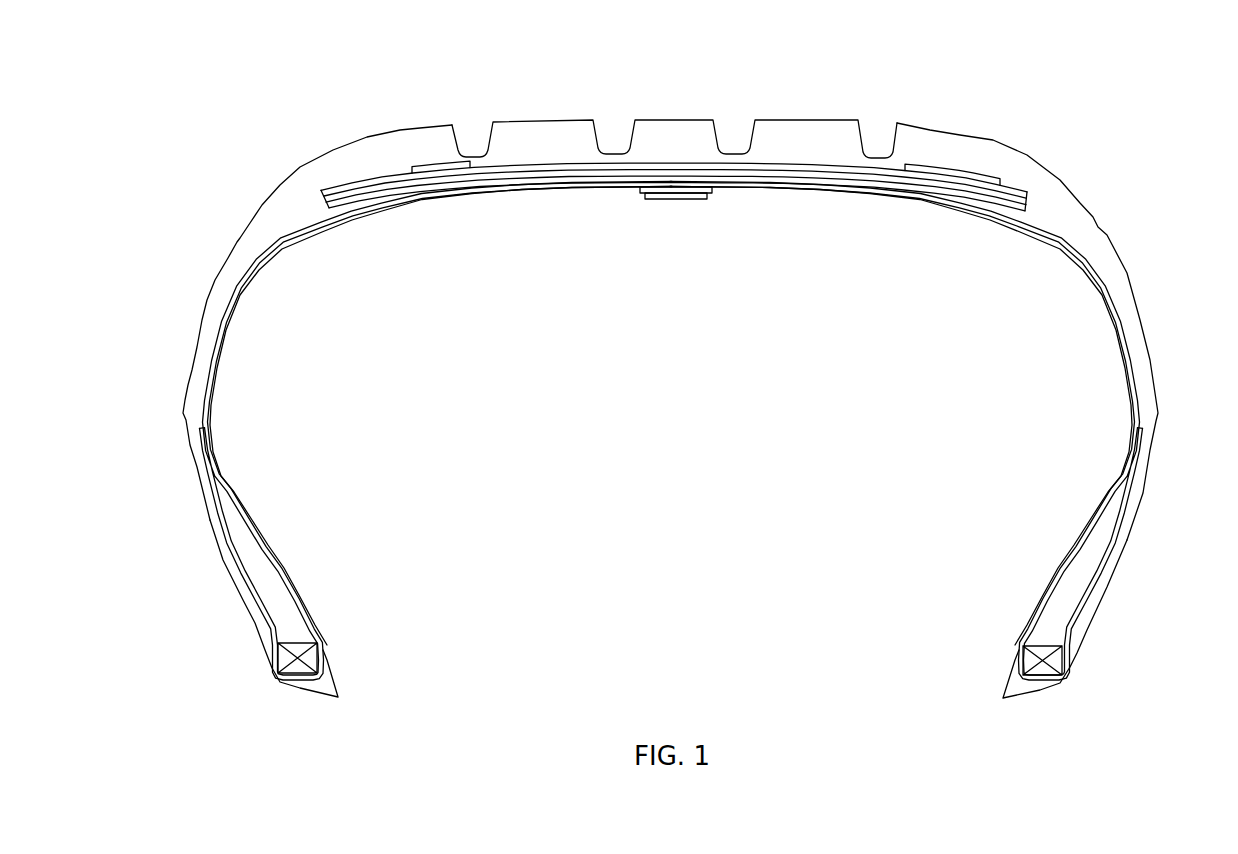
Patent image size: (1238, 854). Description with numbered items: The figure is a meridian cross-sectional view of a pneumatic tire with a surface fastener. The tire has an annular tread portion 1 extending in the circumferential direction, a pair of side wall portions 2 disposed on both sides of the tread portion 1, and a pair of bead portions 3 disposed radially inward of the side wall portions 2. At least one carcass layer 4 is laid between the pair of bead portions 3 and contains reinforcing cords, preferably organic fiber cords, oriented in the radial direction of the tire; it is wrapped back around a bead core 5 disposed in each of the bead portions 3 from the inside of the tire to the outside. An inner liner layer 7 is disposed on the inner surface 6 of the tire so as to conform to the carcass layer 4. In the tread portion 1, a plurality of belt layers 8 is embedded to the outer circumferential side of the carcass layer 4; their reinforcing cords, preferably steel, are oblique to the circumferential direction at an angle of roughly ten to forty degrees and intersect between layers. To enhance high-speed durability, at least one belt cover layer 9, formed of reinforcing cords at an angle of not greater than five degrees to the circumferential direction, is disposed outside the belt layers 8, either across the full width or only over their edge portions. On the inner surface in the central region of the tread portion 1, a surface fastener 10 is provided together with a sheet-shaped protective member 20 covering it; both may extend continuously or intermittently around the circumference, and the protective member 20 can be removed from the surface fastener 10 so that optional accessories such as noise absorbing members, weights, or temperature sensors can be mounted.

The tread portion 1 is at (812, 116).
The side wall portions 2 is at (190, 472).
The bead portions 3 is at (260, 653).
The carcass layer 4 is at (1122, 323).
The bead core 5 is at (310, 660).
The inner surface 6 is at (557, 188).
The inner liner layer 7 is at (505, 190).
The belt layers 8 is at (823, 177).
The belt cover layer 9 is at (958, 170).
The surface fastener 10 is at (640, 190).
The protective member 20 is at (692, 200).